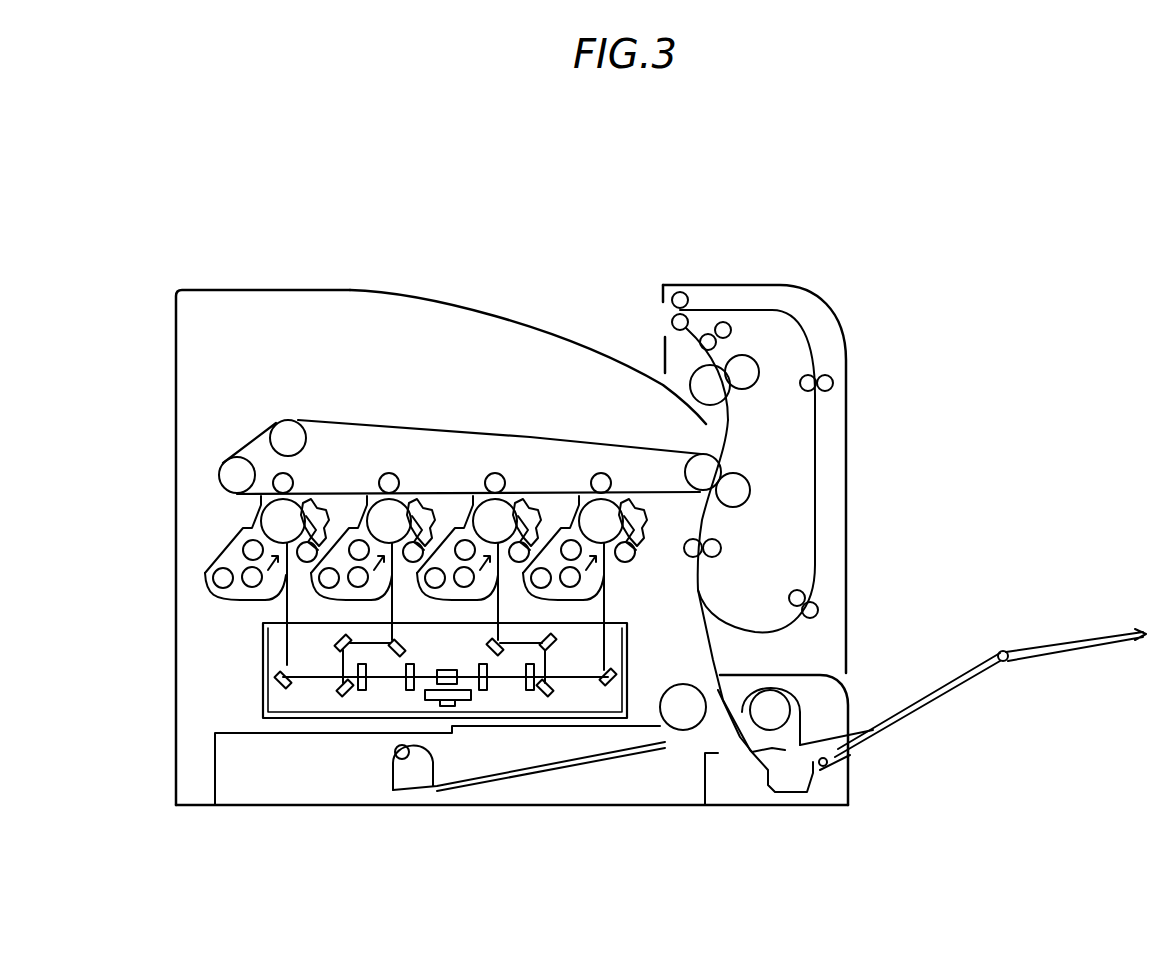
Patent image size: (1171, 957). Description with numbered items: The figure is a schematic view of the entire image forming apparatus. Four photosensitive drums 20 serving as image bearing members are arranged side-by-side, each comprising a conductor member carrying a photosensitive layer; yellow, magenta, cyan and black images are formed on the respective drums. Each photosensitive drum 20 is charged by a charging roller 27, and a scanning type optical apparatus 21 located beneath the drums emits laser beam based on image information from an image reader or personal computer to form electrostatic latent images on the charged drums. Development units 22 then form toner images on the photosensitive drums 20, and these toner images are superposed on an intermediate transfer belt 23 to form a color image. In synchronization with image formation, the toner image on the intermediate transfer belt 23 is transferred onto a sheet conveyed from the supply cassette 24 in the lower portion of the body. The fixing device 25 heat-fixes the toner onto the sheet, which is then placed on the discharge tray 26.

The photosensitive drum 20 is at (586, 500).
The scanning type optical apparatus 21 is at (303, 718).
The development unit 22 is at (562, 512).
The intermediate transfer belt 23 is at (350, 420).
The supply cassette 24 is at (563, 763).
The fixing device 25 is at (748, 372).
The discharge tray 26 is at (451, 300).
The charging roller 27 is at (612, 545).